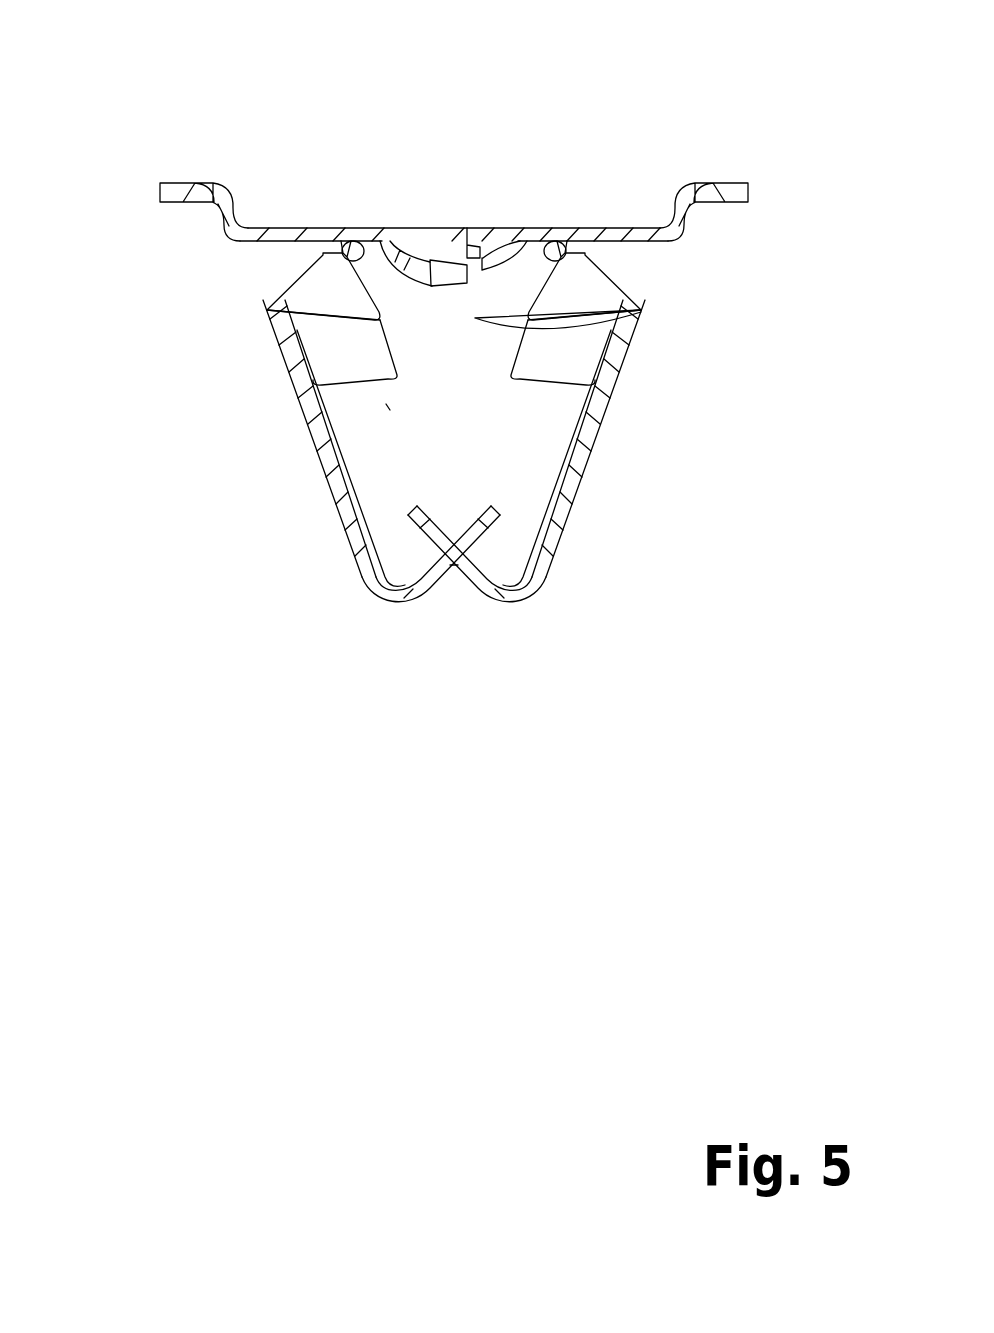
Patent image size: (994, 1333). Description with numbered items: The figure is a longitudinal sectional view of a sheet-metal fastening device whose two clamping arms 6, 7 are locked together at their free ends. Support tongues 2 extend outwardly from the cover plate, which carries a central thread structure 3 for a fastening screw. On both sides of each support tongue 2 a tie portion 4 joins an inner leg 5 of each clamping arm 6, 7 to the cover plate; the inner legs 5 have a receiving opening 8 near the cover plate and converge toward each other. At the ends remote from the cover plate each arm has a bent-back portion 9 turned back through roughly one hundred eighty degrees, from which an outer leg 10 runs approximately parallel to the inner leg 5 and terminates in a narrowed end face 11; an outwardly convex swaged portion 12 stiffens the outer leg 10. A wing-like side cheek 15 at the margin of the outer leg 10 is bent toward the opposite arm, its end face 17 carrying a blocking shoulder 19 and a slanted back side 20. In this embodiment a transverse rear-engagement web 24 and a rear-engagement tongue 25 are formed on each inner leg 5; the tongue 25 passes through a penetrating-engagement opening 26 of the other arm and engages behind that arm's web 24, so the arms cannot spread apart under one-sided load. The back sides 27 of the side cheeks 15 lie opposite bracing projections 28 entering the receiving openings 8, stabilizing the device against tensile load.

The support tongue 2 is at (160, 202).
The thread structure 3 is at (435, 244).
The tie portion 4 is at (340, 240).
The inner leg 5 is at (385, 505).
The clamping arm 6 is at (559, 573).
The clamping arm 7 is at (338, 557).
The receiving opening 8 is at (335, 425).
The bent-back portion 9 is at (383, 598).
The outer leg 10 is at (330, 440).
The end face 11 is at (263, 306).
The swaged portion 12 is at (345, 465).
The side cheek 15 is at (330, 338).
The end face 17 is at (298, 290).
The blocking shoulder 19 is at (365, 236).
The slanted back side 20 is at (267, 311).
The rear-engagement web 24 is at (470, 517).
The rear-engagement tongue 25 is at (413, 562).
The penetrating-engagement opening 26 is at (431, 590).
The back side 27 is at (388, 403).
The bracing projection 28 is at (384, 412).